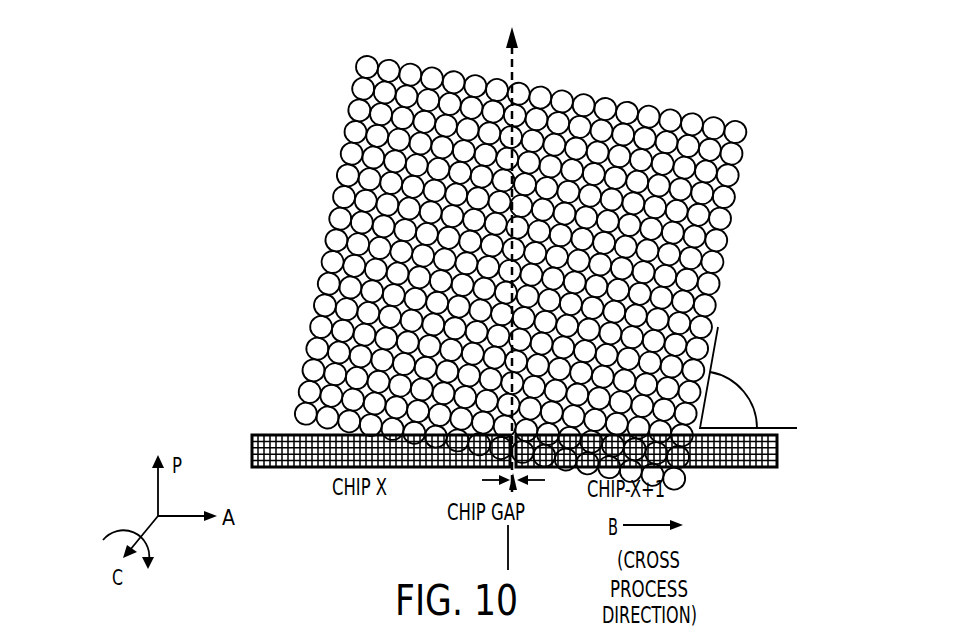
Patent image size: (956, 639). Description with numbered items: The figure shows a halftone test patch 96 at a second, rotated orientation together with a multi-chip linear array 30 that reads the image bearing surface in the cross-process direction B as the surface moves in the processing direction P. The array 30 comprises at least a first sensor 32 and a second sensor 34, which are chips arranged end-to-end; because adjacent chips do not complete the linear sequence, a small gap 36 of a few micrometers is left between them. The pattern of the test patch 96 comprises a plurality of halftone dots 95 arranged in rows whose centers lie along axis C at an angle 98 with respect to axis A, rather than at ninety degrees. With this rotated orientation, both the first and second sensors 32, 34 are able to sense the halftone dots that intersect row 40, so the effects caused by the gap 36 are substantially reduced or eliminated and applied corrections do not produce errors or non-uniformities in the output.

The linear array 30 is at (514, 447).
The first sensor 32 is at (417, 468).
The second sensor 34 is at (757, 468).
The gap 36 is at (514, 490).
The row 40 is at (516, 78).
The halftone dots 95 is at (778, 150).
The test patch 96 is at (424, 272).
The angle 98 is at (742, 380).